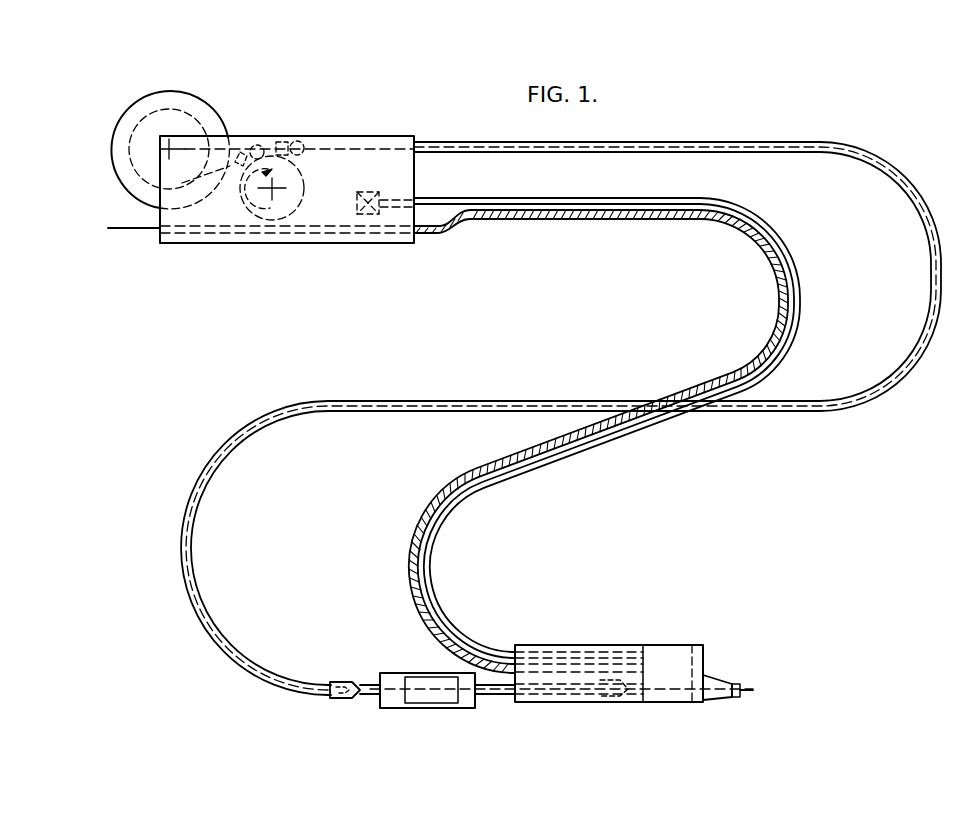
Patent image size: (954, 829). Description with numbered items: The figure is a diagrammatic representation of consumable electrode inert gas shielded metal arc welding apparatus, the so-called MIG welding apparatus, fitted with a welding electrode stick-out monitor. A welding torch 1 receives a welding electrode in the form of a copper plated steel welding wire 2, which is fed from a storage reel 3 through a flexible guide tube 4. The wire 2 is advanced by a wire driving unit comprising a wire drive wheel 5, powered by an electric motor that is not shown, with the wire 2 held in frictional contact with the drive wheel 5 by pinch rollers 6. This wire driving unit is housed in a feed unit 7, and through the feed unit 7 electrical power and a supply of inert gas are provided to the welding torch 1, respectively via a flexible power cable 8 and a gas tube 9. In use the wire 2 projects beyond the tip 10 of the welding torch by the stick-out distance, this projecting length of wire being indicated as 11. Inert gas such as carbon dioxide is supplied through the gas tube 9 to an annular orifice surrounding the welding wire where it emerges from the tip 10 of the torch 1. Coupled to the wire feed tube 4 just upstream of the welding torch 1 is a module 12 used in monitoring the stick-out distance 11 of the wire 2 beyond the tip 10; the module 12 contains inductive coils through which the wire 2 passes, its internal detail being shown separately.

The welding torch 1 is at (645, 640).
The welding wire 2 is at (222, 644).
The storage reel 3 is at (201, 113).
The flexible guide tube 4 is at (288, 686).
The wire drive wheel 5 is at (288, 207).
The pinch rollers 6 is at (293, 140).
The feed unit 7 is at (258, 252).
The flexible power cable 8 is at (663, 220).
The gas tube 9 is at (572, 458).
The tip 10 is at (737, 683).
The stick-out distance 11 is at (748, 692).
The module 12 is at (411, 710).